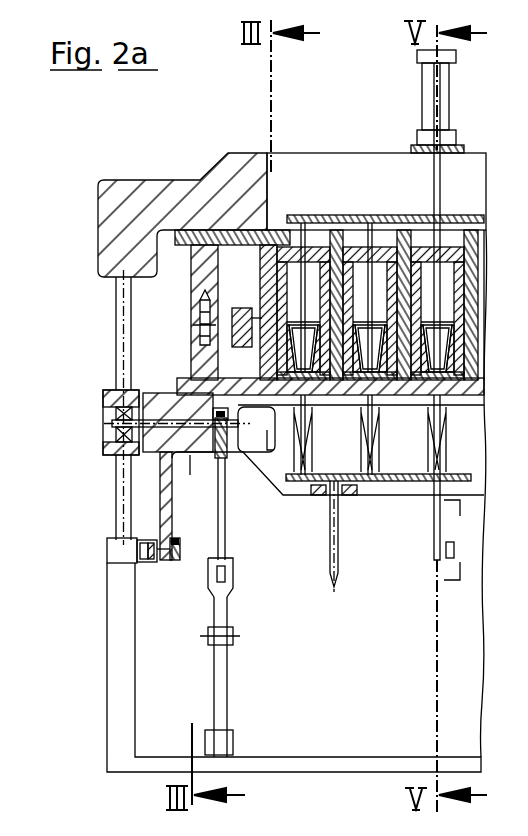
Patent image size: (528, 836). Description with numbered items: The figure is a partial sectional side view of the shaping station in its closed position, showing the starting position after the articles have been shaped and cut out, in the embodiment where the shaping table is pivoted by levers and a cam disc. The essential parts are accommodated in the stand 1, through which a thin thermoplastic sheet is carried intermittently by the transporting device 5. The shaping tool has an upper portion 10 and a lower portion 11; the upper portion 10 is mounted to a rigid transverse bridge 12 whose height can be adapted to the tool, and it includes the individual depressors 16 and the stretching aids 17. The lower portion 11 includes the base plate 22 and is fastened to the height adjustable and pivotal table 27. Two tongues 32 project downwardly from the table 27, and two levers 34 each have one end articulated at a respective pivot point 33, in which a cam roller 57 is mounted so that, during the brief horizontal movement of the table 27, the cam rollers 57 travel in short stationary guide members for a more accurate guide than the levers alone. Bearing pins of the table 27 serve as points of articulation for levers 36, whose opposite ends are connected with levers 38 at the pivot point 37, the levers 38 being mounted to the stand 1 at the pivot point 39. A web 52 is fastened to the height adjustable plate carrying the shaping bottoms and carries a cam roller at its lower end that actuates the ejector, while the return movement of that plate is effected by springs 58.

The stand 1 is at (118, 690).
The transporting device 5 is at (240, 314).
The upper portion 10 is at (182, 268).
The lower portion 11 is at (185, 332).
The transverse bridge 12 is at (150, 190).
The depressors 16 is at (308, 265).
The stretching aids 17 is at (377, 338).
The base plate 22 is at (247, 388).
The table 27 is at (153, 407).
The tongues 32 is at (166, 470).
The pivot points 33 is at (160, 563).
The levers 34 is at (178, 545).
The levers 36 is at (219, 502).
The pivot point 37 is at (205, 565).
The levers 38 is at (222, 620).
The pivot point 39 is at (240, 745).
The web 52 is at (436, 536).
The cam roller 57 is at (140, 551).
The springs 58 is at (295, 447).